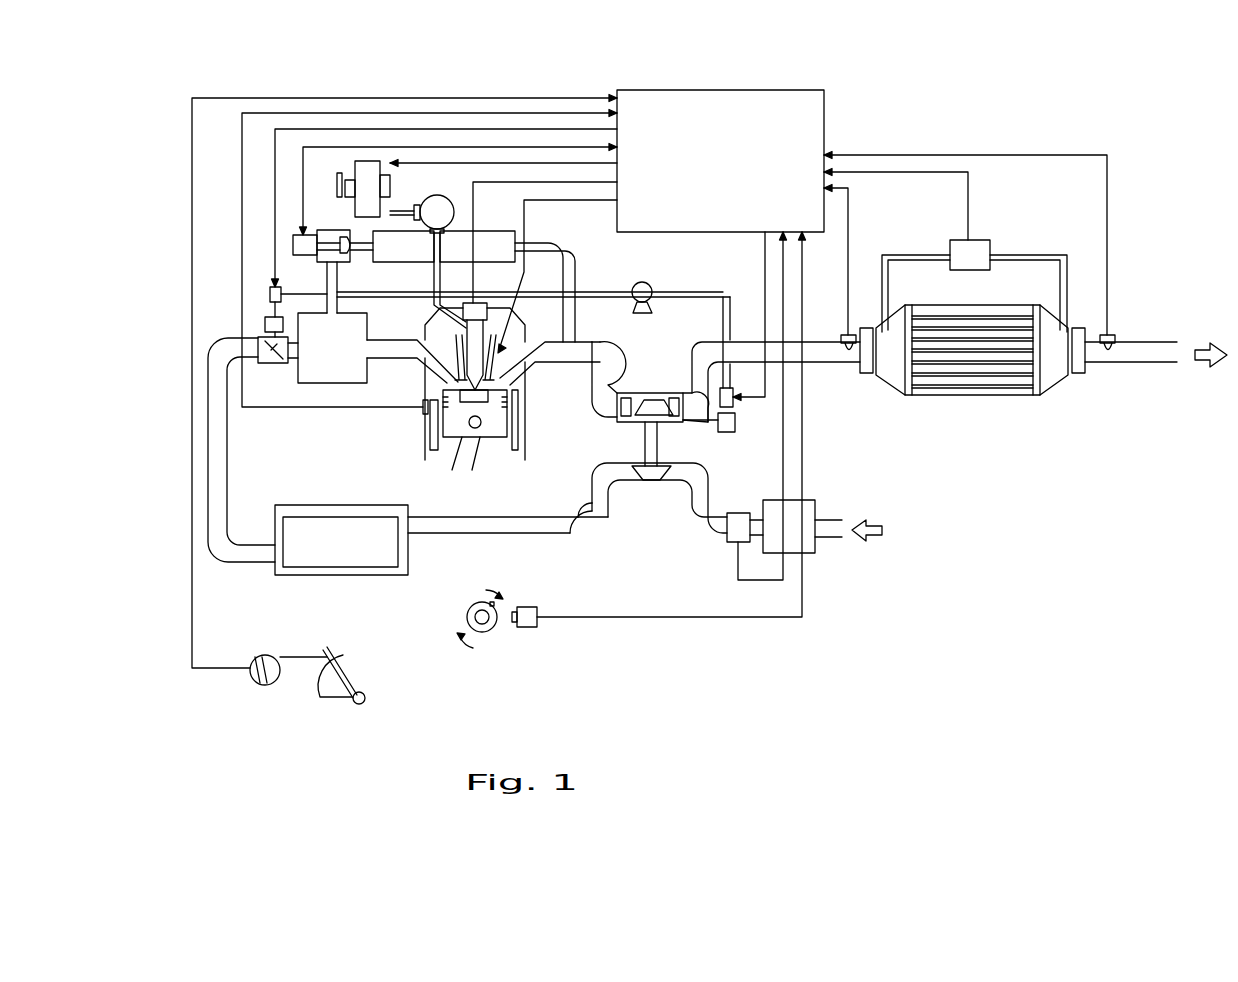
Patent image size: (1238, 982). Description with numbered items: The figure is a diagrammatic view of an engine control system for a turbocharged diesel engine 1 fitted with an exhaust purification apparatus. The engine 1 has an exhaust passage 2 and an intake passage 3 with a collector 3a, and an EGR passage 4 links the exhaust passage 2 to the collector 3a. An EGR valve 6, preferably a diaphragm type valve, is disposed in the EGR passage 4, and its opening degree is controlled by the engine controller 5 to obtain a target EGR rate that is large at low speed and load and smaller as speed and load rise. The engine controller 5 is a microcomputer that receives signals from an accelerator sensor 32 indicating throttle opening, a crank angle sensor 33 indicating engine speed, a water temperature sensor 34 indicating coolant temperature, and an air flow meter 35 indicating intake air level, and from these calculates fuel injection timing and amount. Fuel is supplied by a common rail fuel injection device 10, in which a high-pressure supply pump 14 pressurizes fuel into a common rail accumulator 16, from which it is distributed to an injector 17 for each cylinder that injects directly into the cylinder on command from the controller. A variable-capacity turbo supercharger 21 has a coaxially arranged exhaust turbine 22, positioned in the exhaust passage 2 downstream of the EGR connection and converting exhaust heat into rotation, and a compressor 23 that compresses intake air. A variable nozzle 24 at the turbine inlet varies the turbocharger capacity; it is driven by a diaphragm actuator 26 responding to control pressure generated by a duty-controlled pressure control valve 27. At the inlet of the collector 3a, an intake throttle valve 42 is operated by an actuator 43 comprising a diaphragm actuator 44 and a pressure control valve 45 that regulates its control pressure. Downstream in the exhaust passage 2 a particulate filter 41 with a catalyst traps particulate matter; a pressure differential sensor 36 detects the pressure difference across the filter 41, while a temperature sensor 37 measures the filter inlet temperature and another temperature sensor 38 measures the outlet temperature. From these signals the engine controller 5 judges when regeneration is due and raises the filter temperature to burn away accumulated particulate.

The engine 1 is at (535, 466).
The exhaust passage 2 is at (604, 366).
The intake passage 3 is at (388, 346).
The collector 3a is at (349, 326).
The EGR passage 4 is at (578, 276).
The engine controller 5 is at (772, 108).
The EGR valve 6 is at (340, 252).
The common rail fuel injection device 10 is at (414, 188).
The high-pressure supply pump 14 is at (372, 180).
The common rail accumulator 16 is at (440, 206).
The injector 17 is at (489, 313).
The variable-capacity turbo supercharger 21 is at (662, 496).
The exhaust turbine 22 is at (645, 408).
The compressor 23 is at (648, 480).
The variable nozzle 24 is at (617, 418).
The diaphragm actuator 26 is at (724, 427).
The pressure control valve 27 is at (727, 397).
The accelerator sensor 32 is at (252, 678).
The crank angle sensor 33 is at (528, 630).
The water temperature sensor 34 is at (422, 413).
The air flow meter 35 is at (736, 528).
The pressure differential sensor 36 is at (980, 252).
The temperature sensor 37 is at (843, 333).
The temperature sensor 38 is at (1110, 334).
The particulate filter 41 is at (1003, 382).
The intake throttle valve 42 is at (257, 348).
The actuator 43 is at (250, 303).
The diaphragm actuator 44 is at (263, 324).
The pressure control valve 45 is at (268, 290).